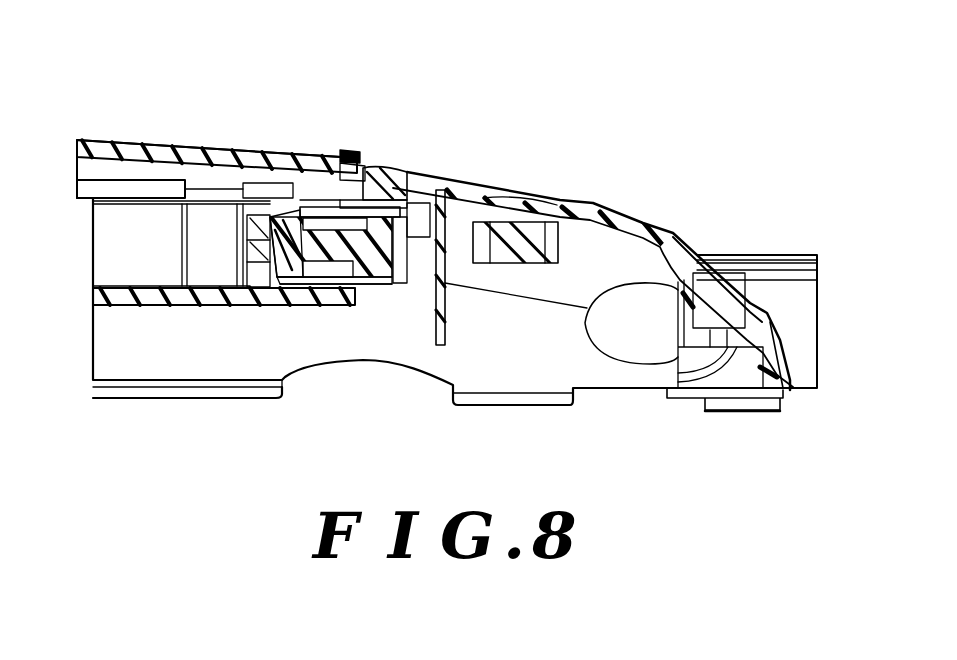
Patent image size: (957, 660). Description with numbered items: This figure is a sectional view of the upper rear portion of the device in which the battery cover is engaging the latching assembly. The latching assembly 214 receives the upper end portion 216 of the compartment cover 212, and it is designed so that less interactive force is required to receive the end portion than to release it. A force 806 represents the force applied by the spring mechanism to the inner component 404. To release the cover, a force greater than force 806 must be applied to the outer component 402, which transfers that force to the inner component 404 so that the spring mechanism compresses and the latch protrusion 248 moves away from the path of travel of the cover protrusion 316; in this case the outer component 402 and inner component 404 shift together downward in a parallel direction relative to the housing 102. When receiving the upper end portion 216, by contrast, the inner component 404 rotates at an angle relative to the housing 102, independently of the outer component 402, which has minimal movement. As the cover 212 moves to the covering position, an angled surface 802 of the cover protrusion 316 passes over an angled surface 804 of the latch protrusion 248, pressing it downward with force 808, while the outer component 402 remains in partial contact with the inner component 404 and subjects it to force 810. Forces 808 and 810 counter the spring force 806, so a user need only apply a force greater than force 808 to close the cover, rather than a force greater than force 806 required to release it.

The housing 102 is at (608, 186).
The compartment cover 212 is at (138, 112).
The latching assembly 214 is at (397, 140).
The upper end portion 216 is at (212, 147).
The latch protrusion 248 is at (300, 255).
The cover protrusion 316 is at (302, 222).
The outer component 402 is at (396, 165).
The inner component 404 is at (323, 240).
The angled surface of the cover protrusion 802 is at (315, 190).
The angled surface of the latch protrusion 804 is at (290, 215).
The force 806 is at (372, 295).
The force 808 is at (302, 190).
The force 810 is at (411, 206).